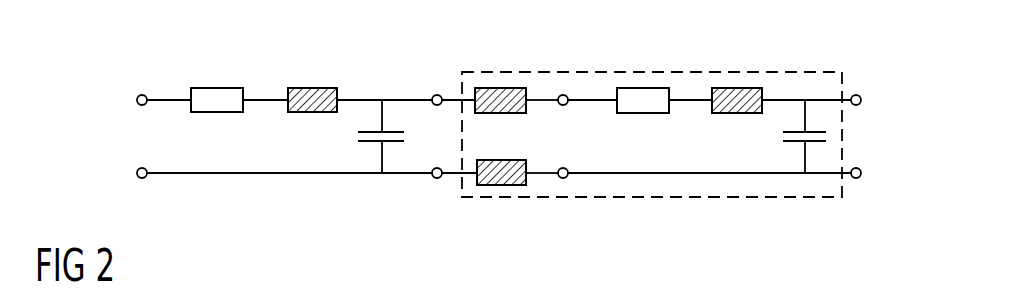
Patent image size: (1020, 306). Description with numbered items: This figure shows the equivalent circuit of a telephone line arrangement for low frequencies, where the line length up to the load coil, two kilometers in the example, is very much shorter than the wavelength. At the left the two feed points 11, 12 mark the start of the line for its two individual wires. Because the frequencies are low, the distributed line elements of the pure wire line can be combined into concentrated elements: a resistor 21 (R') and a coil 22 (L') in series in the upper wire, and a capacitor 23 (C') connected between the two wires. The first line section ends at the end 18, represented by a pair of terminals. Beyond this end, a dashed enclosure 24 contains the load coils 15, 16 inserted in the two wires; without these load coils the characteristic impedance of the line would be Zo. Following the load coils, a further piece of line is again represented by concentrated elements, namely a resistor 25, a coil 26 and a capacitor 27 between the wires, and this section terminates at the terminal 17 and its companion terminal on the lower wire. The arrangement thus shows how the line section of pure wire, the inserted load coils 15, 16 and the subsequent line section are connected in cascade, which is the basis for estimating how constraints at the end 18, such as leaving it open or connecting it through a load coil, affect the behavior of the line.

The feed point 11 is at (136, 98).
The feed point 12 is at (136, 170).
The load coil 15 is at (505, 88).
The load coil 16 is at (505, 185).
The first output terminal 17 is at (864, 98).
The end of first line section 18 is at (440, 92).
The resistor 21 is at (221, 88).
The coil 22 is at (315, 88).
The capacitor 23 is at (369, 142).
The filter block 24 is at (818, 72).
The resistor 25 is at (640, 88).
The inductor 26 is at (742, 88).
The capacitor 27 is at (822, 132).